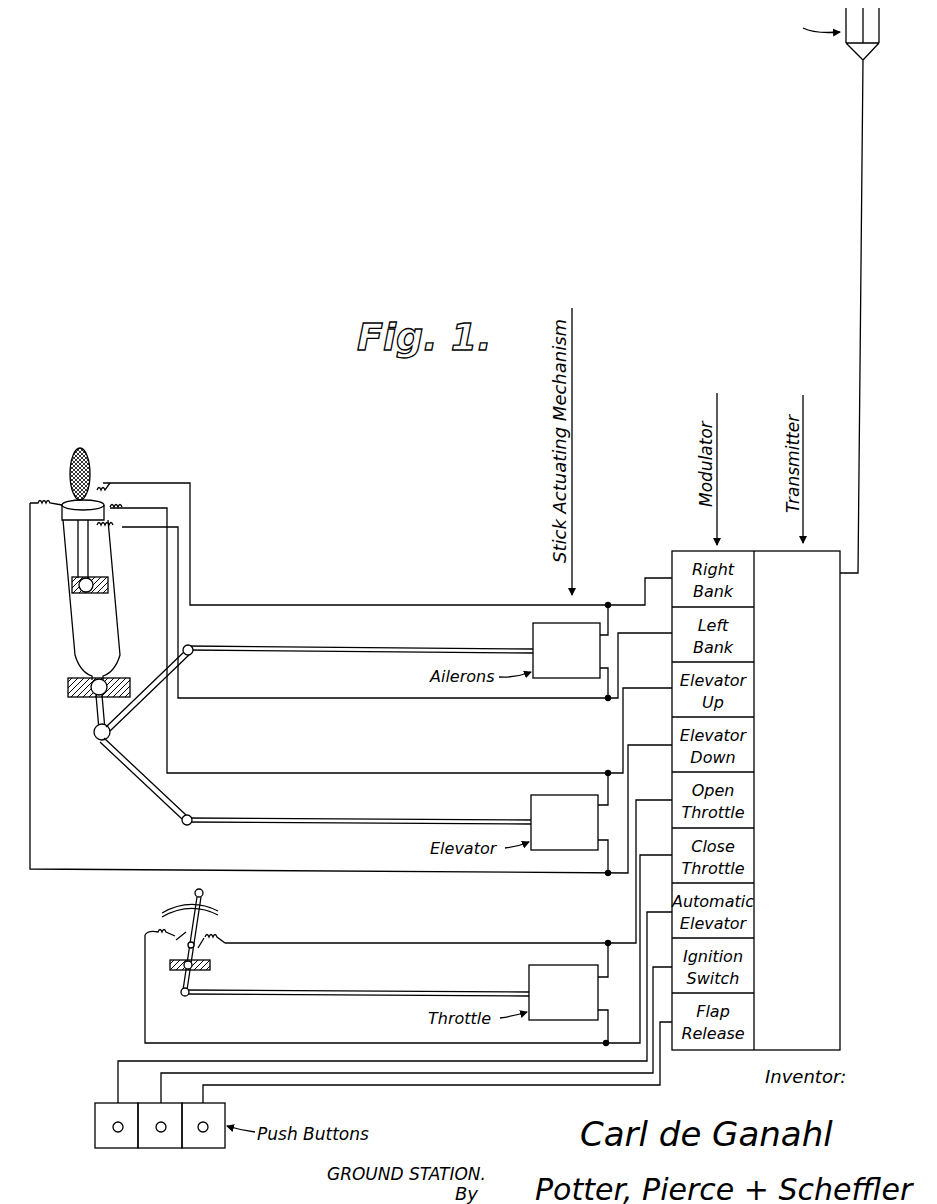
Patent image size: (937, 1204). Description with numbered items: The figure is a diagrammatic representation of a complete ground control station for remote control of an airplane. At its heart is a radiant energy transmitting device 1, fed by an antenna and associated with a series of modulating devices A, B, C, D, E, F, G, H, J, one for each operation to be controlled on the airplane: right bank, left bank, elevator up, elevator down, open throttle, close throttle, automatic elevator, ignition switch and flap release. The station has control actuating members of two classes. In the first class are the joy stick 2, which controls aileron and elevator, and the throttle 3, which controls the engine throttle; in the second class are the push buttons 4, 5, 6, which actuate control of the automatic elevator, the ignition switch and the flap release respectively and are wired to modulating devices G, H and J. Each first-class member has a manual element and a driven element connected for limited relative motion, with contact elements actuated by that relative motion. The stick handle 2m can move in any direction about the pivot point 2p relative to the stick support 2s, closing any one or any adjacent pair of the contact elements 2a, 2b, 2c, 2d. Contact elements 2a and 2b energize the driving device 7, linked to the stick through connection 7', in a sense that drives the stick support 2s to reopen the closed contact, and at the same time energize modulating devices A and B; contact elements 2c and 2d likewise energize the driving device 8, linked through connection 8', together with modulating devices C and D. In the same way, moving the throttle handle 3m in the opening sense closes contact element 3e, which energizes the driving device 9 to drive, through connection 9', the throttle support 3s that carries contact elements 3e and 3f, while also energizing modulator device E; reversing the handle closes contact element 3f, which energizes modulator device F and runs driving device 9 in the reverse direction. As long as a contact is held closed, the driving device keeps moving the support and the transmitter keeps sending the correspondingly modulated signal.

The radiant energy transmitting device 1 is at (827, 534).
The joy stick 2 is at (111, 622).
The stick handle 2m is at (80, 448).
The contact element 2a is at (90, 498).
The contact element 2b is at (78, 518).
The contact element 2c is at (108, 503).
The contact element 2d is at (64, 503).
The pivot point 2p is at (108, 586).
The stick support 2s is at (116, 650).
The throttle 3 is at (220, 938).
The throttle handle 3m is at (194, 893).
The contact element 3f is at (180, 942).
The contact element 3e is at (206, 944).
The throttle support 3s is at (210, 968).
The push button 4 is at (118, 1150).
The push button 5 is at (159, 1150).
The push button 6 is at (200, 1150).
The driving device 7 is at (570, 651).
The connection 7' is at (360, 638).
The driving device 8 is at (569, 823).
The connection 8' is at (359, 806).
The driving device 9 is at (568, 993).
The connection 9' is at (357, 978).
The modulating device A is at (750, 595).
The modulating device B is at (750, 650).
The modulating device C is at (750, 705).
The modulating device D is at (750, 760).
The modulator device E is at (750, 816).
The modulator device F is at (750, 871).
The modulating device G is at (750, 926).
The modulating device H is at (750, 981).
The modulating device J is at (750, 1038).